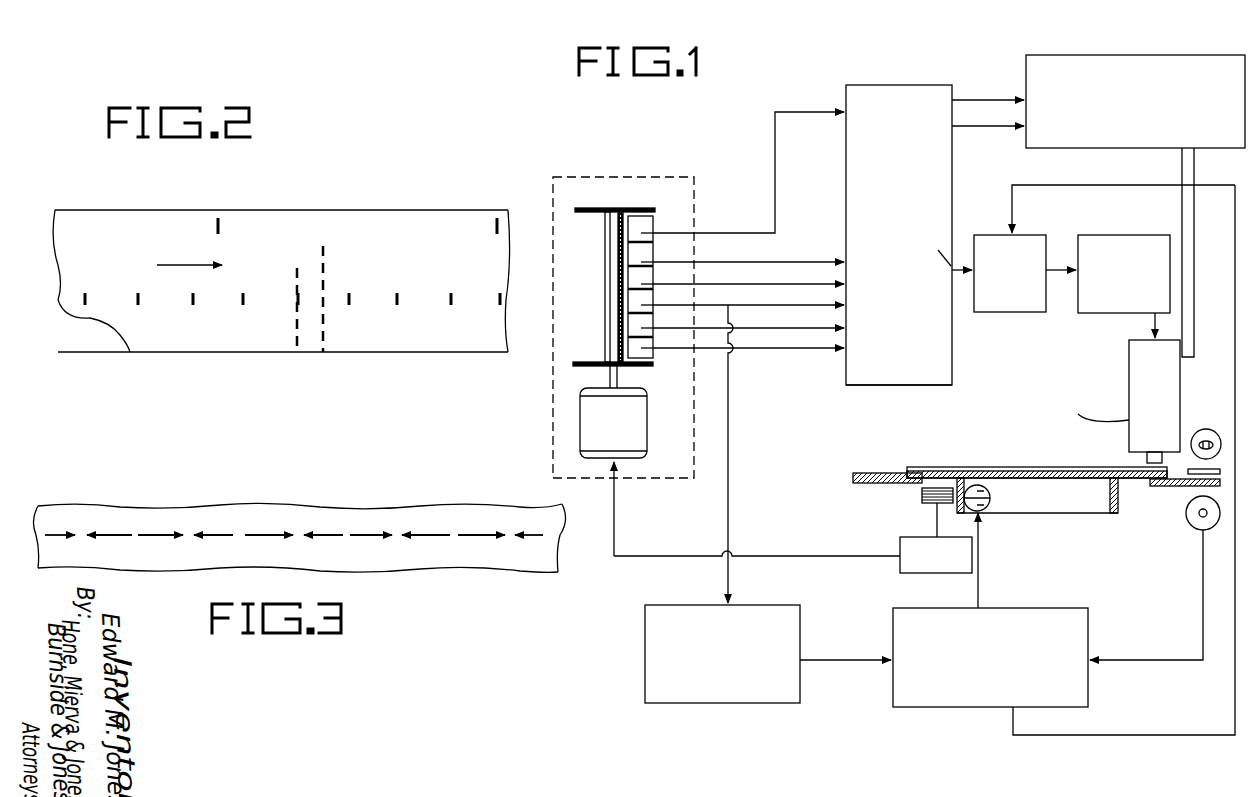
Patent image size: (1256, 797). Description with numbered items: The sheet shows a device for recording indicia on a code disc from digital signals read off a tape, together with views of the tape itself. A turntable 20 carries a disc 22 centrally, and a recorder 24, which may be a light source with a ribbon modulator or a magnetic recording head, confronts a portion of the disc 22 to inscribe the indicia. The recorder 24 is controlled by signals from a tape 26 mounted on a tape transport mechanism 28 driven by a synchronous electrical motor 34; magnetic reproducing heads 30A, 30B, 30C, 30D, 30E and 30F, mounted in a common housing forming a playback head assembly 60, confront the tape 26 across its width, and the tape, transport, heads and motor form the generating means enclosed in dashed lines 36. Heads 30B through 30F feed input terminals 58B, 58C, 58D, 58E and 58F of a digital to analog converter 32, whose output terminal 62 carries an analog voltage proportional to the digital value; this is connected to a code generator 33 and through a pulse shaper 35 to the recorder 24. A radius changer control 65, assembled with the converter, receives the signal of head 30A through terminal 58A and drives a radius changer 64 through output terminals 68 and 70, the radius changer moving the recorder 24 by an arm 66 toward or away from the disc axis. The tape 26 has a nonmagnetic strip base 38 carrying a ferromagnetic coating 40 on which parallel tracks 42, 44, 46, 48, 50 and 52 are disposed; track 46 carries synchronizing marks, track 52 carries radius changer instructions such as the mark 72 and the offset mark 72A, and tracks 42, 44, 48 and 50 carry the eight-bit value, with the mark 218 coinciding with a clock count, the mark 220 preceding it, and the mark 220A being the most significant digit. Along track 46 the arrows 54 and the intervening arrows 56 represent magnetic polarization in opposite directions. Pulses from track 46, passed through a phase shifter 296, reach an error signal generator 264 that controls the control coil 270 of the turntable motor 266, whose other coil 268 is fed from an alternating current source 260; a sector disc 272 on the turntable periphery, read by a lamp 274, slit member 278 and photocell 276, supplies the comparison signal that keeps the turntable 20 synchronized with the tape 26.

In FIG. 1, the turntable 20 is at (1071, 494).
In FIG. 1, the disc 22 is at (972, 452).
In FIG. 1, the recorder 24 is at (1130, 370).
In FIG. 1, the tape 26 is at (618, 285).
In FIG. 2, the tape 26 is at (138, 230).
In FIG. 3, the tape 26 is at (438, 520).
In FIG. 1, the tape transport mechanism 28 is at (607, 206).
In FIG. 1, the magnetic reproducing head 30A is at (645, 232).
In FIG. 1, the magnetic reproducing head 30B is at (645, 261).
In FIG. 1, the magnetic reproducing head 30C is at (645, 283).
In FIG. 1, the magnetic reproducing head 30D is at (645, 304).
In FIG. 1, the magnetic reproducing head 30E is at (645, 327).
In FIG. 1, the magnetic reproducing head 30F is at (650, 350).
In FIG. 1, the digital to analog converter 32 is at (898, 372).
In FIG. 1, the code generator 33 is at (996, 235).
In FIG. 1, the synchronous electrical motor 34 is at (596, 415).
In FIG. 1, the pulse shaper 35 is at (1101, 235).
In FIG. 1, the signal generating means 36 is at (694, 177).
In FIG. 2, the strip base 38 is at (103, 343).
In FIG. 2, the coating 40 is at (205, 330).
In FIG. 2, the track 42 is at (508, 352).
In FIG. 2, the track 44 is at (494, 326).
In FIG. 2, the track 46 is at (508, 298).
In FIG. 3, the track 46 is at (571, 534).
In FIG. 2, the track 48 is at (494, 288).
In FIG. 2, the track 50 is at (490, 250).
In FIG. 2, the track 52 is at (508, 212).
In FIG. 3, the arrows 54 is at (92, 532).
In FIG. 3, the arrows 56 is at (118, 532).
In FIG. 1, the input terminal 58A is at (842, 111).
In FIG. 1, the input terminal 58B is at (842, 261).
In FIG. 1, the input terminal 58C is at (842, 283).
In FIG. 1, the input terminal 58D is at (842, 304).
In FIG. 1, the input terminal 58E is at (842, 327).
In FIG. 1, the input terminal 58F is at (842, 350).
In FIG. 1, the playback head assembly 60 is at (645, 216).
In FIG. 1, the output terminal 62 is at (928, 246).
In FIG. 1, the radius changer 64 is at (1113, 148).
In FIG. 1, the radius changer control 65 is at (905, 95).
In FIG. 1, the arm 66 is at (1182, 206).
In FIG. 1, the output terminal 68 is at (965, 105).
In FIG. 1, the output terminal 70 is at (955, 128).
In FIG. 2, the instruction signal mark 72 is at (490, 222).
In FIG. 2, the pulse mark 72A is at (222, 222).
In FIG. 2, the mark 218 is at (297, 352).
In FIG. 2, the mark 220 is at (323, 352).
In FIG. 2, the mark 220A is at (326, 248).
In FIG. 1, the alternating current source 260 is at (900, 568).
In FIG. 1, the error signal generator 264 is at (1086, 690).
In FIG. 1, the motor 266 is at (920, 497).
In FIG. 1, the coil 268 is at (936, 505).
In FIG. 1, the control coil 270 is at (990, 505).
In FIG. 1, the disc 272 is at (853, 477).
In FIG. 1, the lamp 274 is at (1216, 418).
In FIG. 1, the photocell 276 is at (1187, 520).
In FIG. 1, the slit member 278 is at (1180, 487).
In FIG. 1, the phase shifter 296 is at (800, 690).